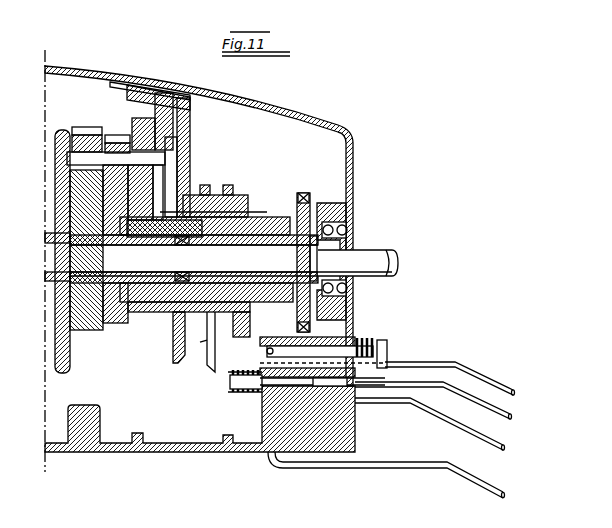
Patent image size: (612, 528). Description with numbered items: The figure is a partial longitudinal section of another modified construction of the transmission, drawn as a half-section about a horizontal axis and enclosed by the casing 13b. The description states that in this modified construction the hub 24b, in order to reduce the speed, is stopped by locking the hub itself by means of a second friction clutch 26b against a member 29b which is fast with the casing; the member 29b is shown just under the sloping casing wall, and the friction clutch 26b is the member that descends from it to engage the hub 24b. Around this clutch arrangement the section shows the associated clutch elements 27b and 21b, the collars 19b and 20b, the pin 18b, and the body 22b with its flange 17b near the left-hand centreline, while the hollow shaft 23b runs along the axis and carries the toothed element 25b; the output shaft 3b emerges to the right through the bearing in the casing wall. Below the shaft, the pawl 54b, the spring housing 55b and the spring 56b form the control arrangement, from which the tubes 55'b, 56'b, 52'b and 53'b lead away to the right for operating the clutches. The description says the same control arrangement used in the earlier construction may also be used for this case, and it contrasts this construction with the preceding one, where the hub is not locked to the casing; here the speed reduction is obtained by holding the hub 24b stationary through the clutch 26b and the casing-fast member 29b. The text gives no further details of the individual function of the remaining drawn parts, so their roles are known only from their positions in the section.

The output shaft 3b is at (385, 262).
The housing 13b is at (306, 118).
The flange plate 17b is at (62, 323).
The pin 18b is at (72, 156).
The collar 19b is at (72, 137).
The collar 20b is at (108, 134).
The clutch block 21b is at (133, 125).
The hub body 22b is at (82, 208).
The hollow shaft 23b is at (117, 232).
The hub 24b is at (273, 223).
The toothed ring 25b is at (227, 188).
The second friction clutch 26b is at (190, 114).
The clutch element 27b is at (138, 118).
The member fast with the casing 29b is at (153, 90).
The pawl 54b is at (213, 362).
The spring housing 55b is at (377, 352).
The tube 55'b is at (450, 372).
The spring 56b is at (242, 388).
The tube 56'b is at (456, 404).
The tube 52'b is at (452, 426).
The tube 53'b is at (409, 476).